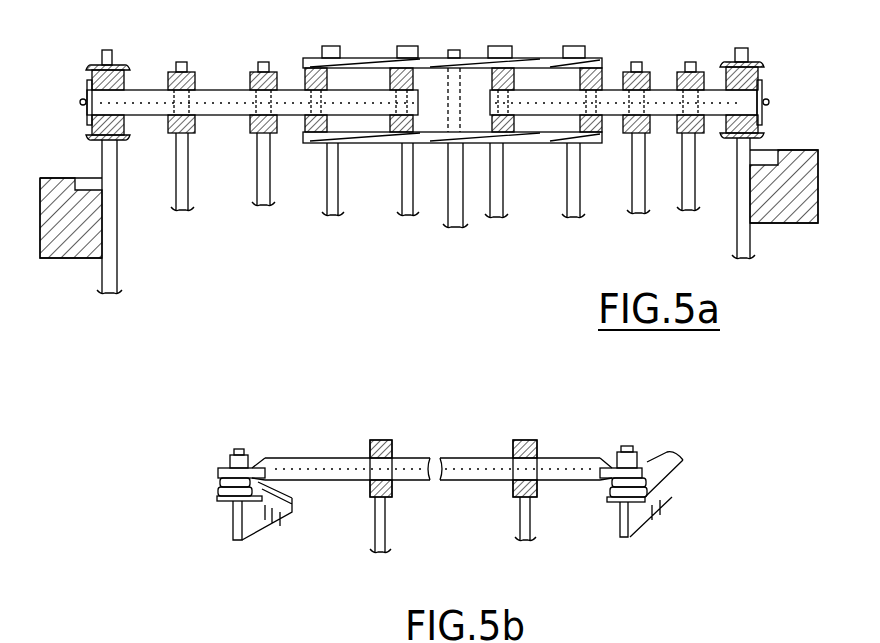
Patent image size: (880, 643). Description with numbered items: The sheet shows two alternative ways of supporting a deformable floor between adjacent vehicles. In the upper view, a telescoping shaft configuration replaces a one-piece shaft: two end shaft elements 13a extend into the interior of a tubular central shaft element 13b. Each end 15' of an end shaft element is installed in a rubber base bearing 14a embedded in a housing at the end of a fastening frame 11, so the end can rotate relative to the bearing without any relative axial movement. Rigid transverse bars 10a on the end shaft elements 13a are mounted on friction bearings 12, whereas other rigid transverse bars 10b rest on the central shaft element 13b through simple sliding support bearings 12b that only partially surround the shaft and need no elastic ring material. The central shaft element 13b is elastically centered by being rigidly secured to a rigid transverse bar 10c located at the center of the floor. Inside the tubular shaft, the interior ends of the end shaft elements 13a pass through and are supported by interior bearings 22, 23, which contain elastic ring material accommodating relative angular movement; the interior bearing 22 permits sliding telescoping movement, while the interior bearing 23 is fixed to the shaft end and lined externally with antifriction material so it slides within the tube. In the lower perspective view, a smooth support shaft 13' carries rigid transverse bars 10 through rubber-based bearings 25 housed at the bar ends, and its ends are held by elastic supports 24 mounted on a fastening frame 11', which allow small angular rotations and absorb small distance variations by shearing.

In FIG. 5a, the fastening frame 11 is at (430, 67).
In FIG. 5a, the rubber base bearing 14a is at (90, 137).
In FIG. 5a, the end 15' is at (435, 75).
In FIG. 5a, the end shaft element 13a is at (144, 100).
In FIG. 5a, the friction bearing 12 is at (243, 76).
In FIG. 5a, the sliding support bearing 12b is at (320, 52).
In FIG. 5a, the tubular central shaft element 13b is at (380, 58).
In FIG. 5a, the interior bearing 22 is at (300, 143).
In FIG. 5a, the interior bearing 23 is at (445, 125).
In FIG. 5a, the rigid transverse bar 10a is at (187, 197).
In FIG. 5a, the rigid transverse bar 10b is at (340, 203).
In FIG. 5a, the rigid transverse bar 10c is at (459, 244).
In FIG. 5b, the support shaft 13' is at (430, 435).
In FIG. 5b, the elastic support 24 is at (220, 490).
In FIG. 5b, the fastening frame 11' is at (463, 512).
In FIG. 5b, the rubber-based bearing 25 is at (380, 440).
In FIG. 5b, the rigid transverse bar 10 is at (520, 530).